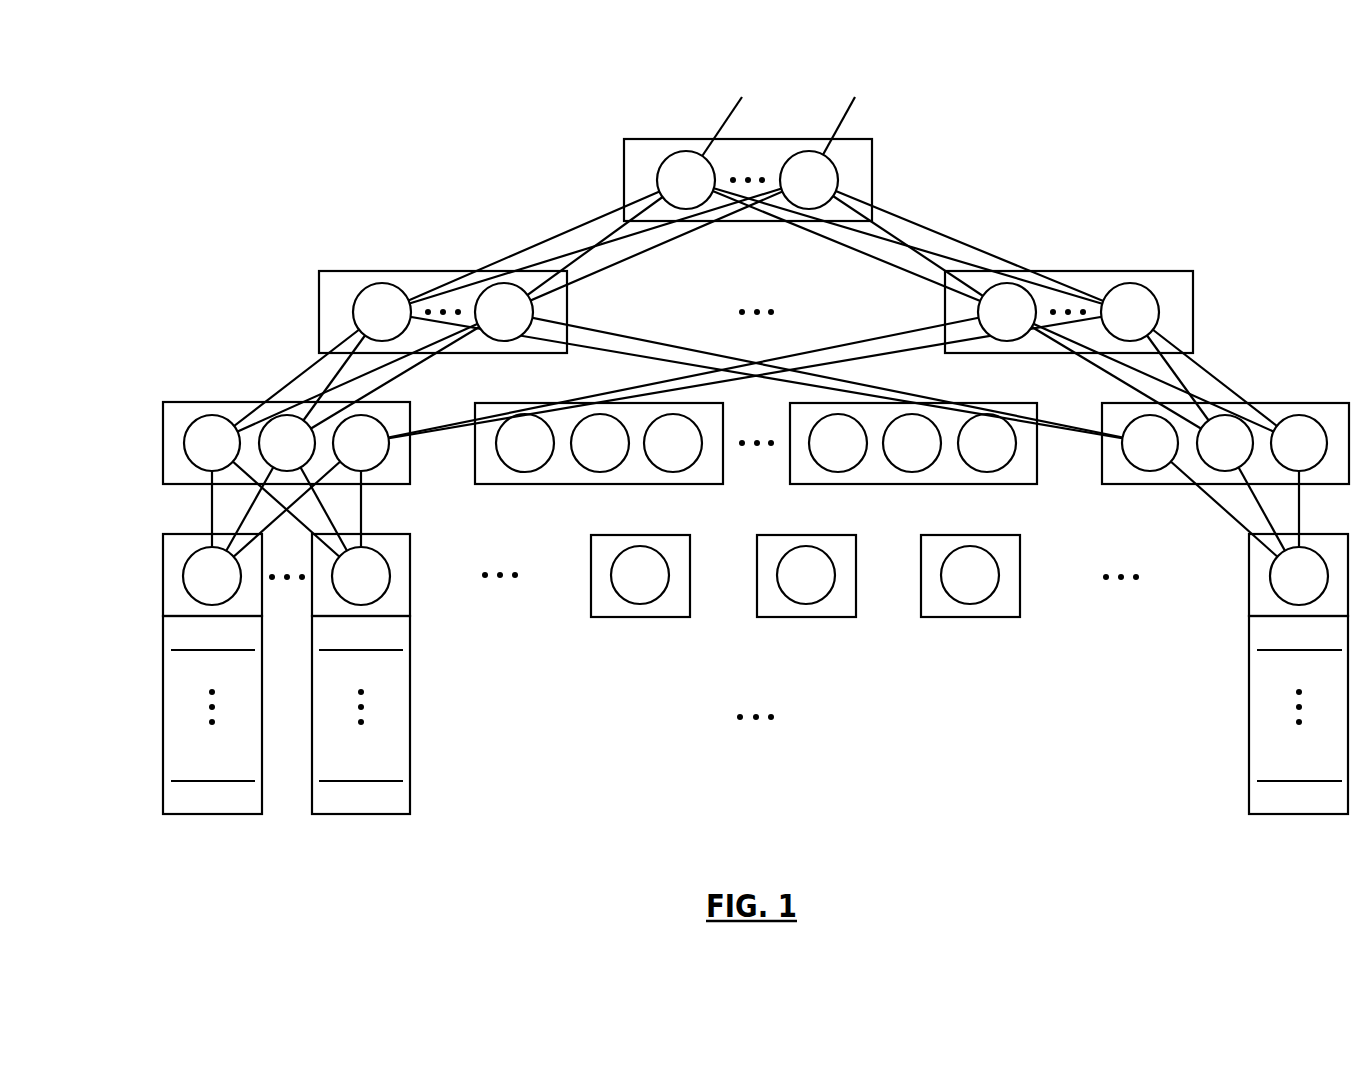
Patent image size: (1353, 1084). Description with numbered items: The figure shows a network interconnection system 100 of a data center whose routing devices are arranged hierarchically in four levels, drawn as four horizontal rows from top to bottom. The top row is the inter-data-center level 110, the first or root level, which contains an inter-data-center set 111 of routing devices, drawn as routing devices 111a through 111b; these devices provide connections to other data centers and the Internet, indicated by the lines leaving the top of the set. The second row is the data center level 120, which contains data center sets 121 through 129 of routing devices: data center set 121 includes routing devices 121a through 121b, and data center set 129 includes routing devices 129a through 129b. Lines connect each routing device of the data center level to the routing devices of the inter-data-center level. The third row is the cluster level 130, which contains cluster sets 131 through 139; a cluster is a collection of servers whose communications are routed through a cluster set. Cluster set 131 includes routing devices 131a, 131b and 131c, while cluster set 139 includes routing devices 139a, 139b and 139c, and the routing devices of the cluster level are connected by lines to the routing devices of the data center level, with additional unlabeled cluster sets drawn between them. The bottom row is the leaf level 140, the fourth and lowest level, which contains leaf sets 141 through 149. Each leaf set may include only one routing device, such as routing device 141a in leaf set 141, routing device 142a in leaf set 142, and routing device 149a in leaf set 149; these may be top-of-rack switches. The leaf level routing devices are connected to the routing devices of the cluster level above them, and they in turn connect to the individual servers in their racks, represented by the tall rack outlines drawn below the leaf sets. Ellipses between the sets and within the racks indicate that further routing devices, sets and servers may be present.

The network interconnection system 100 is at (940, 123).
The inter-data-center level 110 is at (463, 179).
The inter-data-center set 111 is at (726, 179).
The routing device 111a is at (686, 180).
The routing device 111b is at (809, 180).
The data center level 120 is at (624, 303).
The data center set 121 is at (443, 303).
The routing device 121a is at (382, 312).
The routing device 121b is at (504, 312).
The data center set 129 is at (1069, 303).
The routing device 129a is at (1007, 312).
The routing device 129b is at (1130, 312).
The cluster level 130 is at (702, 434).
The cluster set 131 is at (286, 434).
The routing device 131a is at (212, 443).
The routing device 131b is at (287, 443).
The routing device 131c is at (361, 443).
The cluster set 139 is at (1225, 434).
The routing device 139a is at (1150, 443).
The routing device 139b is at (1225, 443).
The routing device 139c is at (1299, 443).
The leaf level 140 is at (701, 665).
The leaf set 141 is at (212, 665).
The routing device 141a is at (212, 576).
The leaf set 142 is at (361, 665).
The routing device 142a is at (361, 576).
The leaf set 149 is at (1298, 665).
The routing device 149a is at (1299, 576).